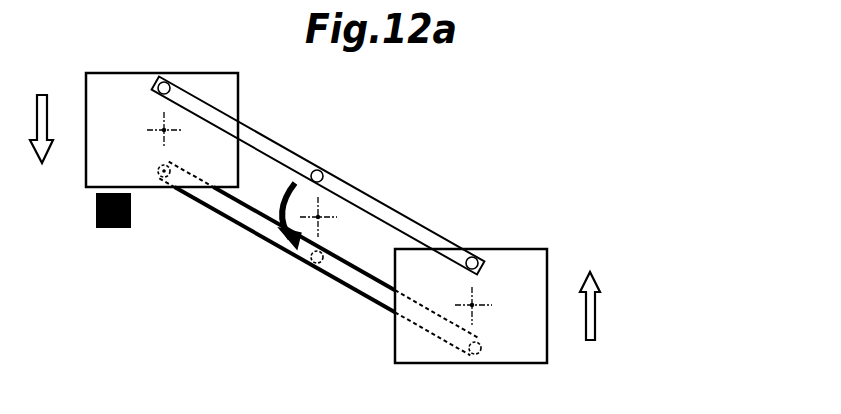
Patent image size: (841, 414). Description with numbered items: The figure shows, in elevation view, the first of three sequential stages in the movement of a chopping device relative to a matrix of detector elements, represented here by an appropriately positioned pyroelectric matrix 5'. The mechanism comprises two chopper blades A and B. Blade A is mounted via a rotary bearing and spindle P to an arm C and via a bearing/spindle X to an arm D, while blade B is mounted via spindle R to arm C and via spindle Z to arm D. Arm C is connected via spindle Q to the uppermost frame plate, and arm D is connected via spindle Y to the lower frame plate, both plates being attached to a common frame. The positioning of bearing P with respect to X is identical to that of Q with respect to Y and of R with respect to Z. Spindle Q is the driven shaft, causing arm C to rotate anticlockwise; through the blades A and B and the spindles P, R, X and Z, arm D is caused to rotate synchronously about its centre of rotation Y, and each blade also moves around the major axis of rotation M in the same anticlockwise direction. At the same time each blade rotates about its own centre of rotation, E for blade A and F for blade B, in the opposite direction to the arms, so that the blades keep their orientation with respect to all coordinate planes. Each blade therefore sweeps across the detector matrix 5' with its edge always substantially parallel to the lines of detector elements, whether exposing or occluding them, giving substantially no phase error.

The chopper blade A is at (117, 97).
The chopper blade B is at (508, 267).
The arm C is at (263, 145).
The arm D is at (252, 222).
The centre of rotation of blade A E is at (163, 124).
The centre of rotation of blade B F is at (477, 302).
The major axis of rotation M is at (328, 212).
The bearing/spindle P is at (168, 83).
The spindle Q is at (323, 170).
The bearing/spindle R is at (467, 252).
The bearing/spindle X is at (166, 180).
The bearing/spindle Y is at (314, 262).
The bearing/spindle Z is at (470, 351).
The pyroelectric matrix 5' is at (98, 241).